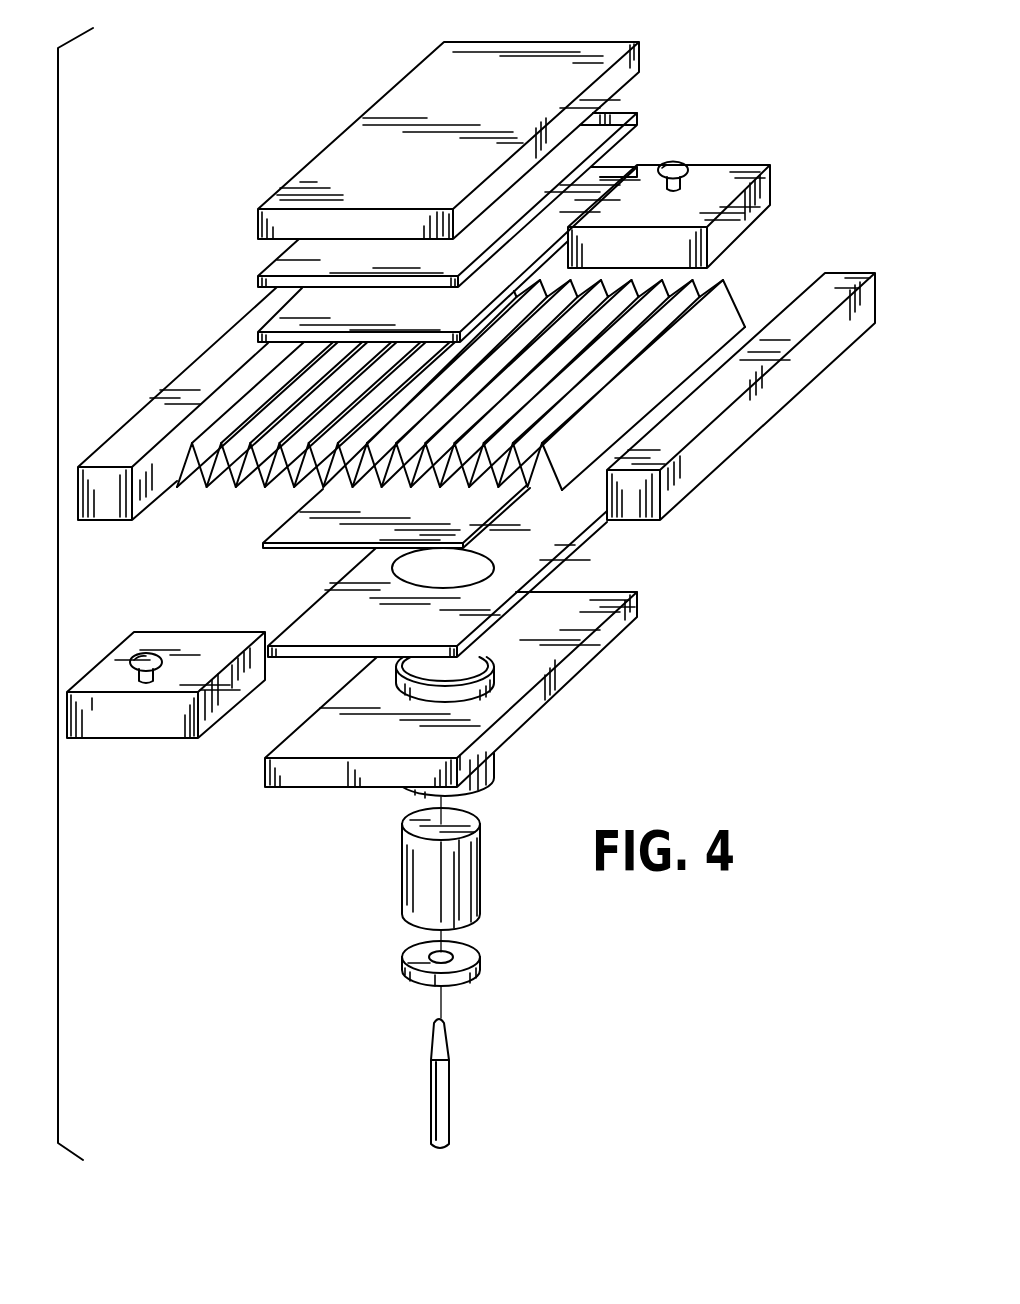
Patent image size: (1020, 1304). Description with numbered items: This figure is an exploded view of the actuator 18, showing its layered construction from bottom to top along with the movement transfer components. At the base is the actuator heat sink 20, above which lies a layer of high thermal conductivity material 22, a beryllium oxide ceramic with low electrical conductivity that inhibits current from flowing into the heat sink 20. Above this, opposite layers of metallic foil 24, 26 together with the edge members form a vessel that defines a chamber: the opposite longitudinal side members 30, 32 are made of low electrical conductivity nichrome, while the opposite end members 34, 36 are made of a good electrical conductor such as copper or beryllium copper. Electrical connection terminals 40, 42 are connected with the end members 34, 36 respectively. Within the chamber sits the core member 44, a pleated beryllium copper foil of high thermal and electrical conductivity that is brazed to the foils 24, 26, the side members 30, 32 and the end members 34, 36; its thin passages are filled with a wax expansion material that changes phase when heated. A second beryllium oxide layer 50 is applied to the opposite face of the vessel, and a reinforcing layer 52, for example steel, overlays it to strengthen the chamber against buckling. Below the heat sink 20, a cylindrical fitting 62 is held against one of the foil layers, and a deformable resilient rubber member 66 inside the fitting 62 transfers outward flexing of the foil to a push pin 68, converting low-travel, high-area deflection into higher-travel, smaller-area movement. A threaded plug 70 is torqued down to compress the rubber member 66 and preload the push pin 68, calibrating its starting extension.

The actuator 18 is at (657, 99).
The actuator heat sink 20 is at (582, 655).
The high thermal conductivity layer 22 is at (578, 547).
The metallic foil layer 24 is at (280, 530).
The metallic foil layer 26 is at (617, 165).
The side member 30 is at (205, 377).
The side member 32 is at (730, 430).
The end member 34 is at (147, 723).
The end member 36 is at (740, 217).
The electrical connection terminal 40 is at (140, 657).
The electrical connection terminal 42 is at (683, 162).
The core member 44 is at (720, 303).
The second thermally conductive layer 50 is at (280, 268).
The reinforcing layer 52 is at (322, 165).
The cylindrical fitting 62 is at (490, 757).
The deformable resilient member 66 is at (462, 873).
The push pin 68 is at (440, 1090).
The threaded plug 70 is at (470, 953).